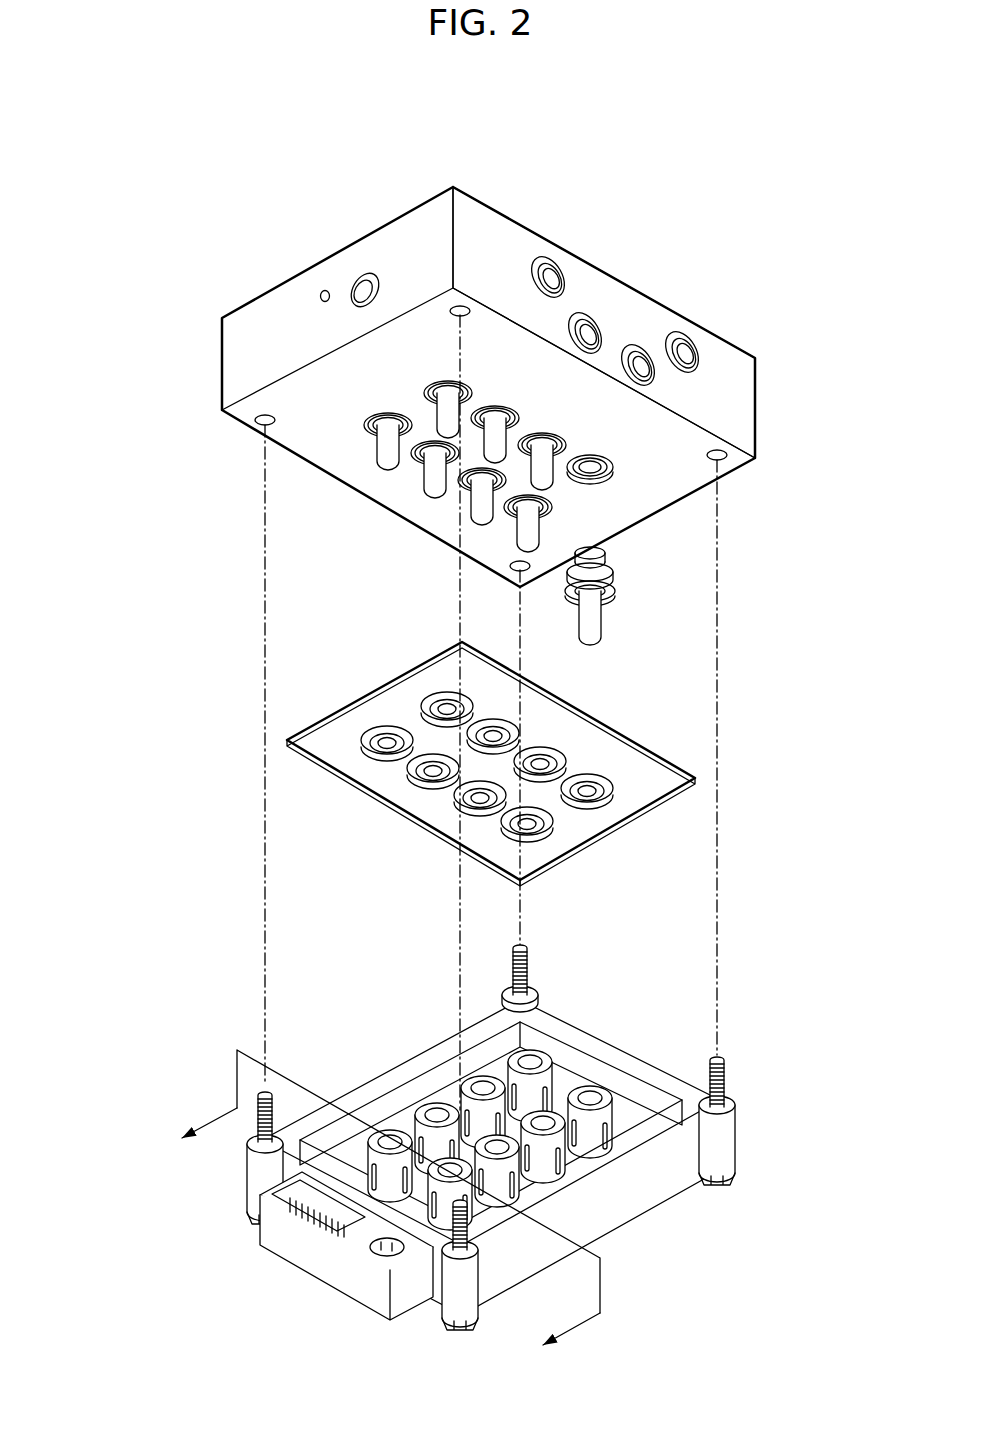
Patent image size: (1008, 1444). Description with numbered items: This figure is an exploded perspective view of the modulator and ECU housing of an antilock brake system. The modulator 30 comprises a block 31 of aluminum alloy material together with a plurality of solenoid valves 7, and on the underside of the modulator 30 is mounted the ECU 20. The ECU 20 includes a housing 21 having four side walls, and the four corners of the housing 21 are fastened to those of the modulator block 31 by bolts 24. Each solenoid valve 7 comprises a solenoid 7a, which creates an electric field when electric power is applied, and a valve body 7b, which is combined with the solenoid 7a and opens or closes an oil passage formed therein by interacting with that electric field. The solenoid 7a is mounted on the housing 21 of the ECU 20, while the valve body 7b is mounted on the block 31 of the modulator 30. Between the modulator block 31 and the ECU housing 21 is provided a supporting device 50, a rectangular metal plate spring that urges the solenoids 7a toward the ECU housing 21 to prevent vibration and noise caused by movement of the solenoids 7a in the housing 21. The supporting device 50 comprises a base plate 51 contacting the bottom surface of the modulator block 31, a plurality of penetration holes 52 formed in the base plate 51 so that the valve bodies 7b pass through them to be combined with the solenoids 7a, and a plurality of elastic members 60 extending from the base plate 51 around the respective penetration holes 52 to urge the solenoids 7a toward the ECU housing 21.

The solenoid valve 7 is at (698, 852).
The solenoid 7a is at (594, 1092).
The valve body 7b is at (596, 644).
The ECU 20 is at (476, 1156).
The housing 21 is at (592, 1222).
The bolts 24 is at (727, 1082).
The modulator 30 is at (532, 383).
The block 31 is at (735, 407).
The supporting device 50 is at (427, 749).
The base plate 51 is at (410, 692).
The penetration holes 52 is at (387, 750).
The elastic members 60 is at (446, 741).